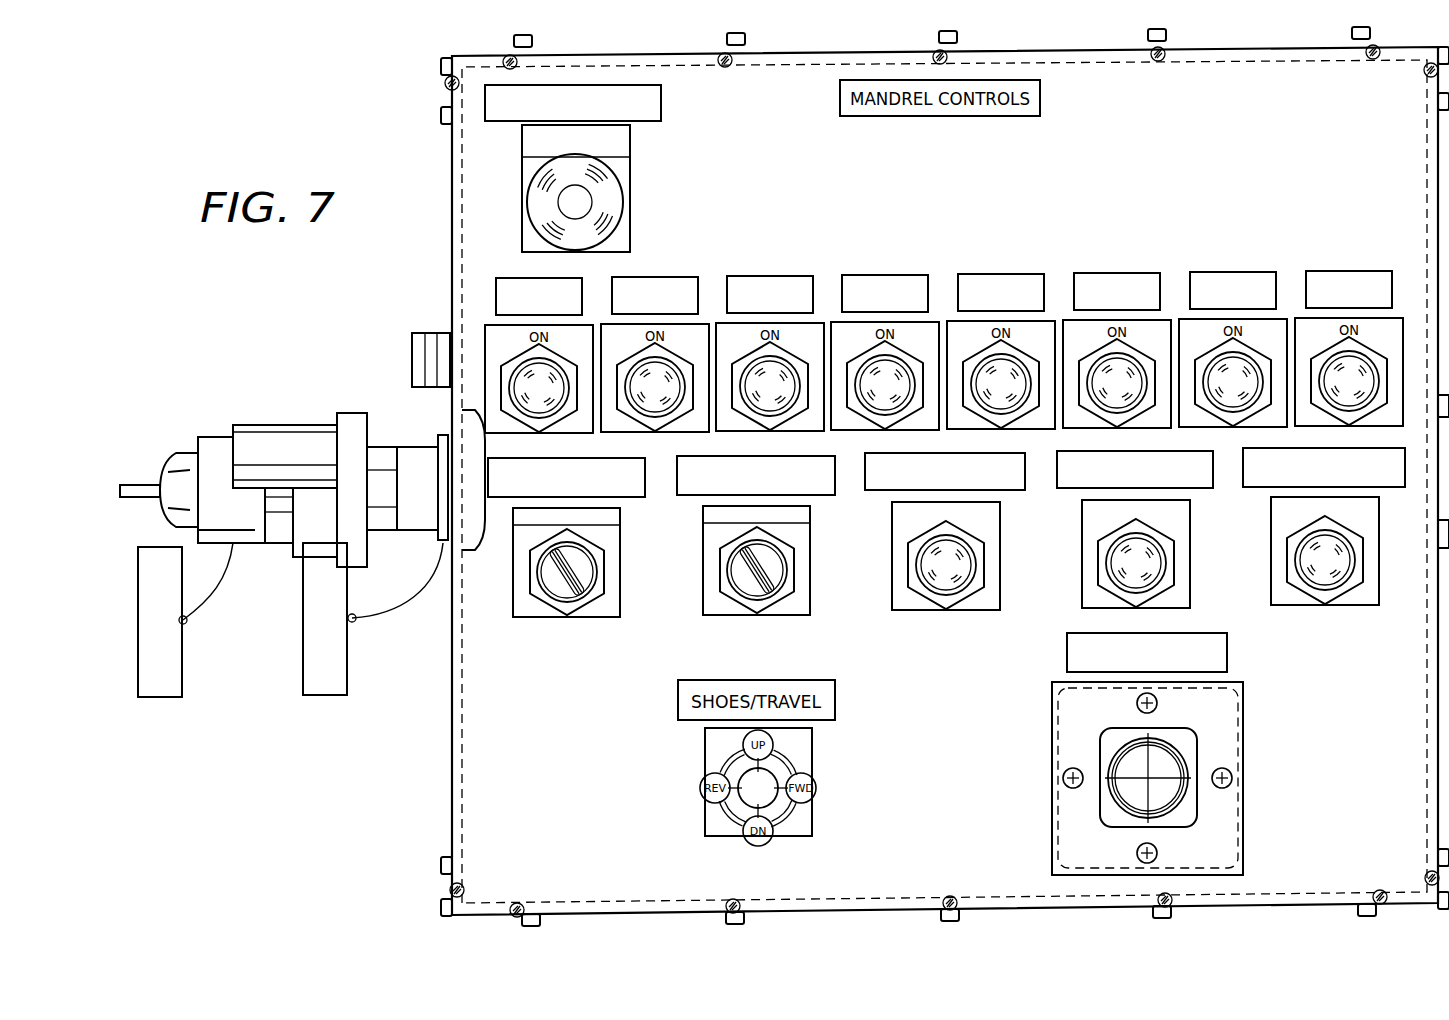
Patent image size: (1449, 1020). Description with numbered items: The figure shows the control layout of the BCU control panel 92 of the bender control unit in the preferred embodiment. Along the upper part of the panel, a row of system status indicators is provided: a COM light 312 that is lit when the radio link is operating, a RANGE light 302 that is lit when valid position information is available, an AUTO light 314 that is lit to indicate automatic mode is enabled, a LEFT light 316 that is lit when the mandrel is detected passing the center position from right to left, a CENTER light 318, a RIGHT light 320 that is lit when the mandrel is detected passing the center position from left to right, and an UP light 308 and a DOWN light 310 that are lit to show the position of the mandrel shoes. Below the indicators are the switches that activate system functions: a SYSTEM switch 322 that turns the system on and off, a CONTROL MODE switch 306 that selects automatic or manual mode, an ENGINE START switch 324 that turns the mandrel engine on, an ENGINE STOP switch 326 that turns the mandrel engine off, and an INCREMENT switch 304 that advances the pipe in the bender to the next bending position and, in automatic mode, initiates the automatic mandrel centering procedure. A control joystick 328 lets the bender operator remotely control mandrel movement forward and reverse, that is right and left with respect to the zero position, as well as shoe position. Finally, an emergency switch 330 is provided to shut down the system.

The BCU control panel 92 is at (452, 737).
The emergency switch 330 is at (662, 101).
The COM light 312 is at (522, 355).
The RANGE light 302 is at (672, 355).
The AUTO light 314 is at (787, 355).
The LEFT light 316 is at (902, 352).
The CENTER light 318 is at (1017, 351).
The RIGHT light 320 is at (1132, 349).
The UP light 308 is at (1249, 347).
The DOWN light 310 is at (1365, 345).
The SYSTEM switch 322 is at (605, 568).
The CONTROL MODE switch 306 is at (795, 566).
The ENGINE START switch 324 is at (984, 565).
The ENGINE STOP switch 326 is at (1174, 567).
The INCREMENT switch 304 is at (1287, 560).
The control joystick 328 is at (1197, 796).